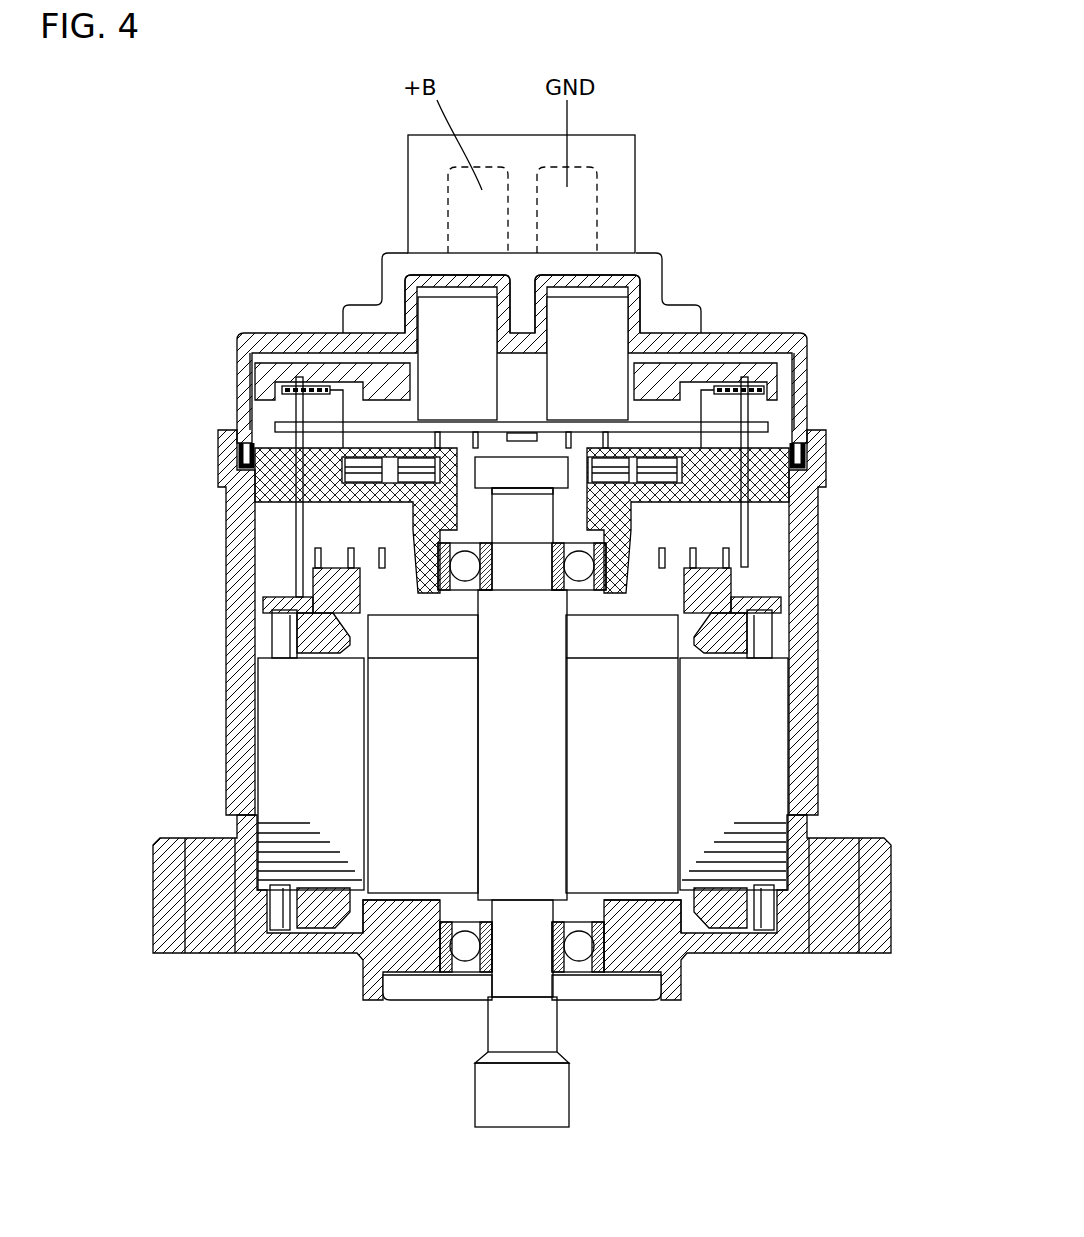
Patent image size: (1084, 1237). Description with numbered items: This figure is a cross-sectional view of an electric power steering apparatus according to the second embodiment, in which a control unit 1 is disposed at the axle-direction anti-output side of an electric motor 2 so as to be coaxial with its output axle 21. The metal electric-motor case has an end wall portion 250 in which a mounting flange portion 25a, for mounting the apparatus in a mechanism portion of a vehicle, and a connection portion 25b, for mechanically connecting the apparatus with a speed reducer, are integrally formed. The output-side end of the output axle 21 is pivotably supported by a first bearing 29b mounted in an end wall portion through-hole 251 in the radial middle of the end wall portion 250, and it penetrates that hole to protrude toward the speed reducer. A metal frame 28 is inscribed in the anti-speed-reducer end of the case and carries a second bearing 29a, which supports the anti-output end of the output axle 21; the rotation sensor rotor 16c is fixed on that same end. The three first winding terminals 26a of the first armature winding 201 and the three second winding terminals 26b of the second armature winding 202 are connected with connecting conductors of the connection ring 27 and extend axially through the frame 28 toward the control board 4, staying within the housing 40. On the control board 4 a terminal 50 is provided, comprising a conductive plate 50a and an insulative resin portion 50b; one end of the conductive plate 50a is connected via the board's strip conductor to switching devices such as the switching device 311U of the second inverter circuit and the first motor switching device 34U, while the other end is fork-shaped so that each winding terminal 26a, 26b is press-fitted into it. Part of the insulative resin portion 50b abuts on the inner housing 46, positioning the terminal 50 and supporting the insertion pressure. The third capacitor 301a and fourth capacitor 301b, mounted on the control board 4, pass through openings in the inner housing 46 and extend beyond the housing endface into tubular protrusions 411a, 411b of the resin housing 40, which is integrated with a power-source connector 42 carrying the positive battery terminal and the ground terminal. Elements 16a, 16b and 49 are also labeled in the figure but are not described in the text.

The control unit 1 is at (815, 393).
The electric motor 2 is at (840, 720).
The control board 4 is at (246, 457).
The output axle 21 is at (562, 1097).
The mounting flange portion 25a is at (160, 880).
The connection portion 25b is at (453, 972).
The end wall portion 250 is at (723, 953).
The end wall portion through-hole 251 is at (425, 893).
The first winding terminal 26a is at (315, 640).
The second winding terminal 26b is at (690, 580).
The connection ring 27 is at (777, 598).
The frame 28 is at (297, 440).
The second bearing 29a is at (590, 592).
The first bearing 29b is at (452, 978).
The first motor switching device 34U is at (277, 430).
The switching device 311U is at (770, 438).
The housing 40 is at (800, 355).
The power-source connector 42 is at (640, 134).
The inner housing 46 is at (258, 372).
The heat dissipation member 49 is at (322, 363).
The terminal 50 is at (760, 380).
The conductive plate 50a is at (698, 387).
The insulative resin portion 50b is at (758, 390).
The bearing holder 16a is at (522, 443).
The bearing holder 16b is at (688, 520).
The rotation sensor rotor 16c is at (487, 472).
The first armature winding 201 is at (265, 656).
The second armature winding 202 is at (523, 754).
The third capacitor 301a is at (427, 322).
The fourth capacitor 301b is at (613, 305).
The tubular protrusion 411a is at (418, 277).
The tubular protrusion 411b is at (640, 277).